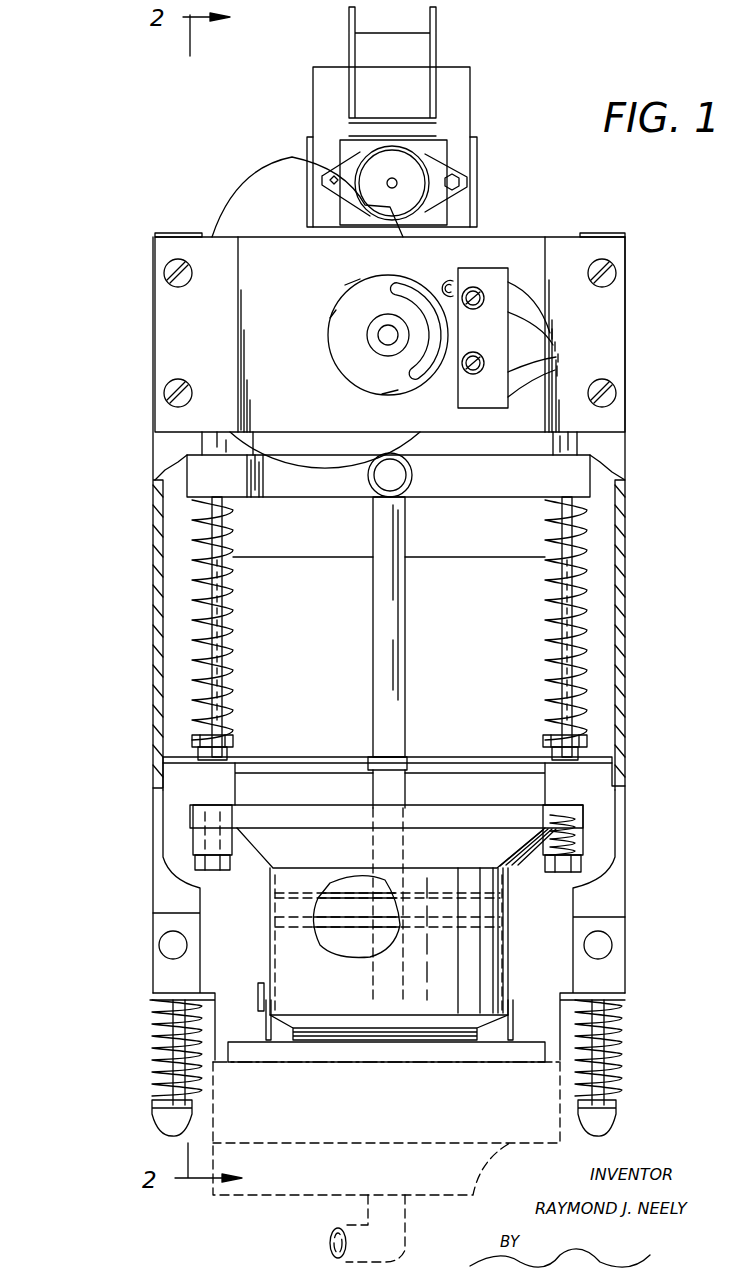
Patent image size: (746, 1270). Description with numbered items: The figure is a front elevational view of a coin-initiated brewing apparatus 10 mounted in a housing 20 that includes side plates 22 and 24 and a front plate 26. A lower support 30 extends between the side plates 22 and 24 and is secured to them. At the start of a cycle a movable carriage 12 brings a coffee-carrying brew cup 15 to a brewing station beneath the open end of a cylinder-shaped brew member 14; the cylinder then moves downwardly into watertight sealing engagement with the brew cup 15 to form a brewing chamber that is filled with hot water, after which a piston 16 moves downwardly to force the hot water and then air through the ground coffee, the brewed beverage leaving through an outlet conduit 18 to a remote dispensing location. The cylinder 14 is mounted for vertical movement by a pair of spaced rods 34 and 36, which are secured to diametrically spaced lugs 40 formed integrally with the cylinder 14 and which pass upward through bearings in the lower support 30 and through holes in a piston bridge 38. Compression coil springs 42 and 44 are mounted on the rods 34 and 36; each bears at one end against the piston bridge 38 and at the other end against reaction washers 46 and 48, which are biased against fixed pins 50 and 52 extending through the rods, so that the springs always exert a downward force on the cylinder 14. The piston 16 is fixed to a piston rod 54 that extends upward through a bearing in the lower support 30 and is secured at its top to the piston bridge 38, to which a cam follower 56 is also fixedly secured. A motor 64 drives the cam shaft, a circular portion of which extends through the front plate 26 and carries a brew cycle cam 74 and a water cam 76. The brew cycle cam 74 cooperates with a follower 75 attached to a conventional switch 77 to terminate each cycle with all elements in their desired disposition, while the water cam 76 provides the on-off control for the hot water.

The brewing apparatus 10 is at (130, 676).
The movable carriage 12 is at (287, 1052).
The brew member 14 is at (483, 972).
The brew cup 15 is at (483, 1035).
The piston 16 is at (393, 907).
The outlet conduit 18 is at (330, 1243).
The housing 20 is at (683, 640).
The side plate 22 is at (152, 510).
The side plate 24 is at (622, 526).
The front plate 26 is at (233, 240).
The lower support 30 is at (350, 735).
The rod 34 is at (215, 640).
The rod 36 is at (565, 650).
The piston bridge 38 is at (505, 482).
The lugs 40 is at (193, 830).
The compression coil spring 42 is at (222, 545).
The compression coil spring 44 is at (548, 565).
The reaction washer 46 is at (233, 740).
The reaction washer 48 is at (545, 738).
The fixed pin 50 is at (230, 752).
The fixed pin 52 is at (545, 752).
The piston rod 54 is at (388, 625).
The cam follower 56 is at (412, 483).
The motor 64 is at (420, 108).
The brew cycle cam 74 is at (355, 287).
The follower 75 is at (456, 250).
The water cam 76 is at (345, 345).
The switch 77 is at (488, 275).